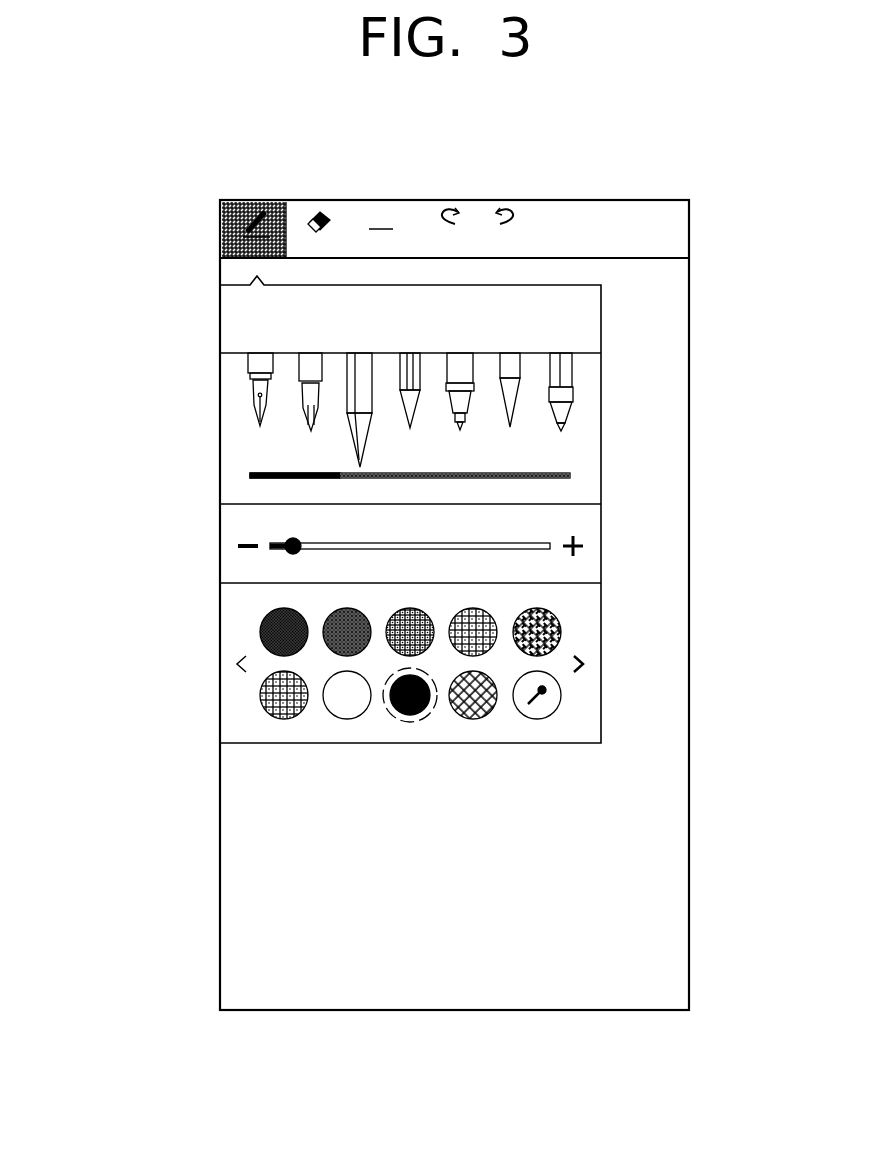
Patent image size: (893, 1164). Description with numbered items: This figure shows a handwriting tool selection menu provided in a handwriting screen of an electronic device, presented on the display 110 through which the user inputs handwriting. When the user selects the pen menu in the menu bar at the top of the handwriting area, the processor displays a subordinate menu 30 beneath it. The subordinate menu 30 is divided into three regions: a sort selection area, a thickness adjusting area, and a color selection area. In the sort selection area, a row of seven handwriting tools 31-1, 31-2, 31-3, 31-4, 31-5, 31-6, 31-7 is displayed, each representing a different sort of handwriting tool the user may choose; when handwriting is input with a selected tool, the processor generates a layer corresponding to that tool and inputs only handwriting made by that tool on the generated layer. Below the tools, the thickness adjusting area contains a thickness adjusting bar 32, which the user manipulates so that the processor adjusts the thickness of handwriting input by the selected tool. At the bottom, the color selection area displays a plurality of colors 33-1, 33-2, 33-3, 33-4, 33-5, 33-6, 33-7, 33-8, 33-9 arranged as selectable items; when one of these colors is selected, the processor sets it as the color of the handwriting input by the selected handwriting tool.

The display 110 is at (692, 363).
The subordinate menu 30 is at (602, 307).
The handwriting tool 31-1 is at (255, 361).
The handwriting tool 31-2 is at (307, 403).
The handwriting tool 31-3 is at (352, 437).
The handwriting tool 31-4 is at (409, 360).
The handwriting tool 31-5 is at (465, 430).
The handwriting tool 31-6 is at (520, 416).
The handwriting tool 31-7 is at (572, 397).
The thickness adjusting bar 32 is at (286, 538).
The color 33-1 is at (260, 632).
The color 33-2 is at (345, 608).
The color 33-3 is at (410, 607).
The color 33-4 is at (476, 608).
The color 33-5 is at (560, 630).
The color 33-6 is at (283, 719).
The color 33-7 is at (347, 719).
The color 33-8 is at (410, 722).
The color 33-9 is at (473, 719).